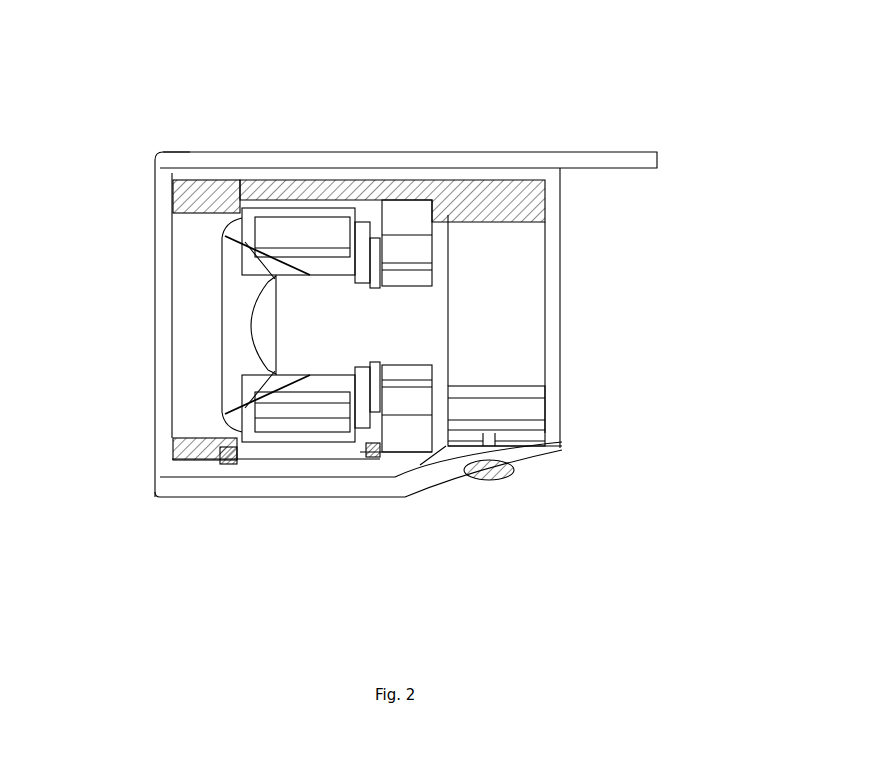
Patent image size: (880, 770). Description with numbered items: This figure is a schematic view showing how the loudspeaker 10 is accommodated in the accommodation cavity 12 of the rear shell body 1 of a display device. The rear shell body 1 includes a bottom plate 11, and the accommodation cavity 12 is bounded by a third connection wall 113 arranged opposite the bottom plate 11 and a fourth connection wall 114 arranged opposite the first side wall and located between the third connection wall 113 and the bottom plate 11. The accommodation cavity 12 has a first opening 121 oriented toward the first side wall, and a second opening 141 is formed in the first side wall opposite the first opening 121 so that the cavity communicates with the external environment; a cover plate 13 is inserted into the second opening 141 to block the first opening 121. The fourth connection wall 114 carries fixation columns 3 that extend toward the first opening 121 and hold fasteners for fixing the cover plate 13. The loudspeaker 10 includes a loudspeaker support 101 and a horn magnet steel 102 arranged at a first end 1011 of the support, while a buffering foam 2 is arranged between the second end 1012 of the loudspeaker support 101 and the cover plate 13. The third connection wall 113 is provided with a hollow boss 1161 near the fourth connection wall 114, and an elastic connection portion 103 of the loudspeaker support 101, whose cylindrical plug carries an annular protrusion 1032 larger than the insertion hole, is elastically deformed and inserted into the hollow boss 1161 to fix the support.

The rear shell body 1 is at (470, 243).
The bottom plate 11 is at (591, 148).
The accommodation cavity 12 is at (530, 276).
The cover plate 13 is at (147, 252).
The second opening 141 is at (144, 160).
The fourth connection wall 114 is at (572, 294).
The third connection wall 113 is at (345, 499).
The first opening 121 is at (159, 477).
The second end 1012 is at (240, 462).
The buffering foam 2 is at (217, 189).
The fixation column 3 is at (524, 174).
The loudspeaker 10 is at (510, 232).
The loudspeaker support 101 is at (338, 184).
The horn magnet steel 102 is at (422, 208).
The elastic connection portion 103 is at (613, 253).
The annular protrusion 1032 is at (543, 437).
The first end 1011 is at (394, 456).
The hollow boss 1161 is at (462, 465).